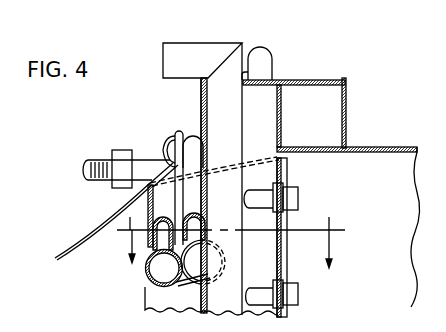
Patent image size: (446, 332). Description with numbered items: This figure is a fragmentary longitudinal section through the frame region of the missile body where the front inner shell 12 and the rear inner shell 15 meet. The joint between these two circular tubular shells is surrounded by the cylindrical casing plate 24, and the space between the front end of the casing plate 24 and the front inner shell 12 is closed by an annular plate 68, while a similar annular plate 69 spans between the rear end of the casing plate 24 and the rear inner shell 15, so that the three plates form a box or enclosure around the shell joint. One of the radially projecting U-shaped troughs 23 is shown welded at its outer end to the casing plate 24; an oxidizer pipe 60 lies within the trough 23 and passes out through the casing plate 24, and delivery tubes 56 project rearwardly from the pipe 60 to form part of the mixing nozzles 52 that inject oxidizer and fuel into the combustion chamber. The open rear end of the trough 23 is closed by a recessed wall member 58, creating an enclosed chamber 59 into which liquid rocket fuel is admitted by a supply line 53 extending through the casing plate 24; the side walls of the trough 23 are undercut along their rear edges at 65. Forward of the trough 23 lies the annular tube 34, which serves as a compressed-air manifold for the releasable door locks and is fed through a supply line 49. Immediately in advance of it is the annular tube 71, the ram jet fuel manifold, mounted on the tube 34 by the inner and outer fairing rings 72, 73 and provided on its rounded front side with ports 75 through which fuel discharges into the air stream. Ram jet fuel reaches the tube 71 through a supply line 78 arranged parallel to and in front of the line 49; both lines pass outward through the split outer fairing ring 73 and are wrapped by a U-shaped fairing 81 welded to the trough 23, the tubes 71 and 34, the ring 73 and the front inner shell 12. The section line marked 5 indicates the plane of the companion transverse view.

The section line 5- 5 is at (231, 240).
The front inner shell 12 is at (72, 246).
The rear inner shell 15 is at (383, 146).
The U-shaped trough 23 is at (286, 172).
The cylindrical casing plate 24 is at (323, 80).
The annular tube 34 is at (187, 286).
The supply line 49 is at (189, 188).
The mixing nozzle 52 is at (302, 195).
The supply line 53 is at (265, 56).
The delivery tube 56 is at (257, 200).
The wall member 58 is at (283, 247).
The enclosed chamber 59 is at (266, 255).
The pipe 60 is at (220, 179).
The undercut 65 is at (283, 152).
The annular plate 68 is at (200, 101).
The annular plate 69 is at (347, 100).
The annular tube 71 is at (152, 288).
The inner fairing ring 72 is at (180, 288).
The outer fairing ring 73 is at (222, 208).
The openings or ports 75 is at (148, 287).
The supply line 78 is at (145, 165).
The U-shaped fairing 81 is at (150, 203).